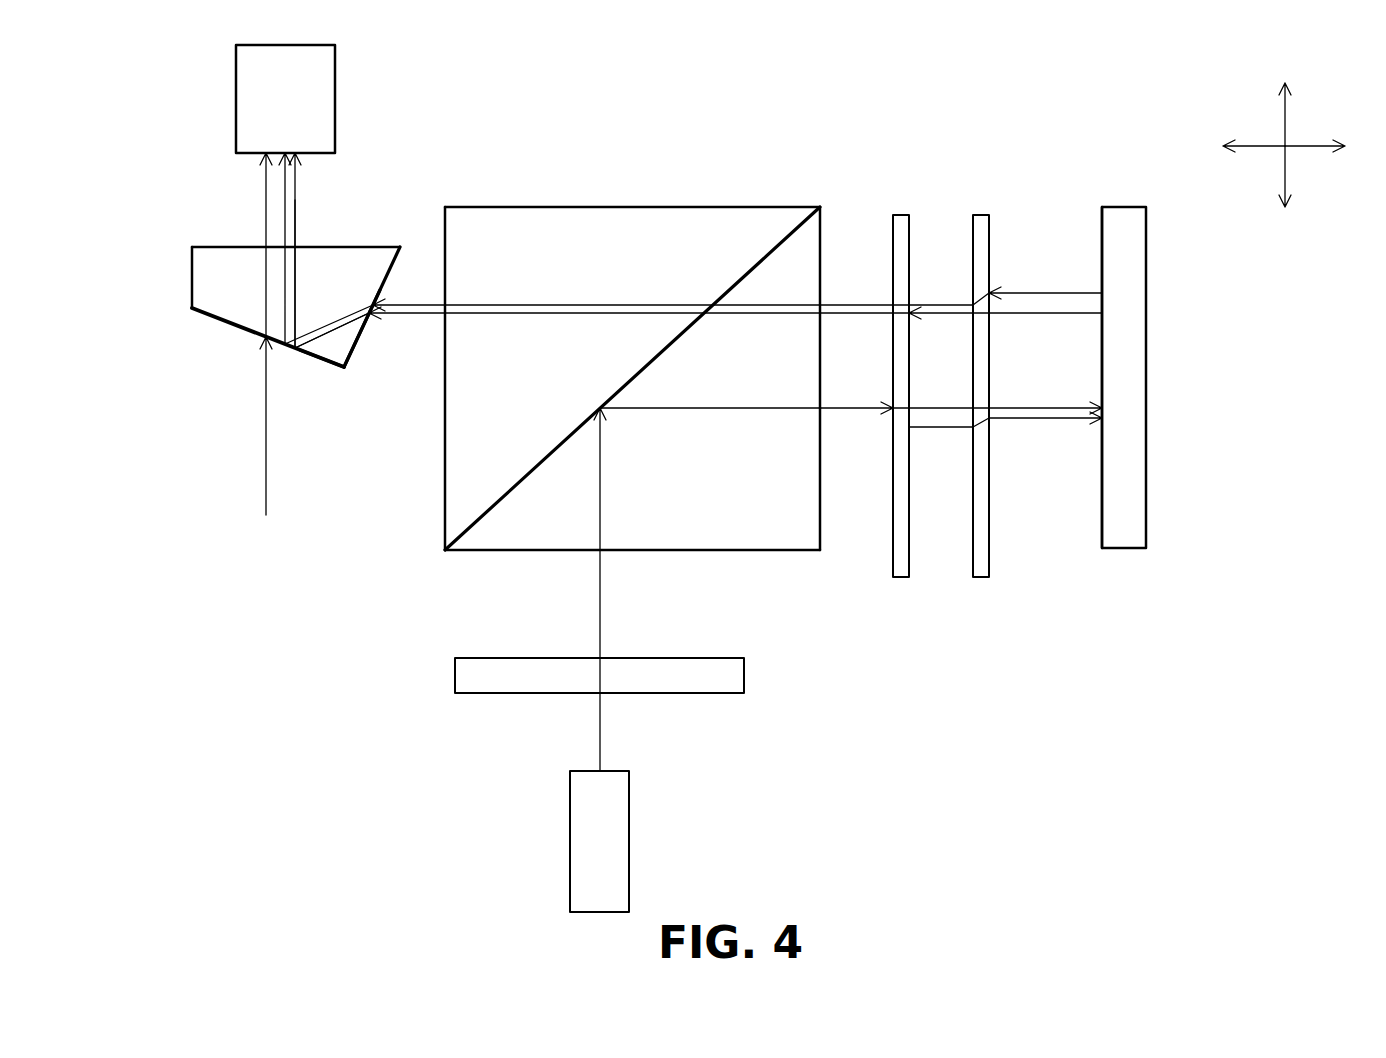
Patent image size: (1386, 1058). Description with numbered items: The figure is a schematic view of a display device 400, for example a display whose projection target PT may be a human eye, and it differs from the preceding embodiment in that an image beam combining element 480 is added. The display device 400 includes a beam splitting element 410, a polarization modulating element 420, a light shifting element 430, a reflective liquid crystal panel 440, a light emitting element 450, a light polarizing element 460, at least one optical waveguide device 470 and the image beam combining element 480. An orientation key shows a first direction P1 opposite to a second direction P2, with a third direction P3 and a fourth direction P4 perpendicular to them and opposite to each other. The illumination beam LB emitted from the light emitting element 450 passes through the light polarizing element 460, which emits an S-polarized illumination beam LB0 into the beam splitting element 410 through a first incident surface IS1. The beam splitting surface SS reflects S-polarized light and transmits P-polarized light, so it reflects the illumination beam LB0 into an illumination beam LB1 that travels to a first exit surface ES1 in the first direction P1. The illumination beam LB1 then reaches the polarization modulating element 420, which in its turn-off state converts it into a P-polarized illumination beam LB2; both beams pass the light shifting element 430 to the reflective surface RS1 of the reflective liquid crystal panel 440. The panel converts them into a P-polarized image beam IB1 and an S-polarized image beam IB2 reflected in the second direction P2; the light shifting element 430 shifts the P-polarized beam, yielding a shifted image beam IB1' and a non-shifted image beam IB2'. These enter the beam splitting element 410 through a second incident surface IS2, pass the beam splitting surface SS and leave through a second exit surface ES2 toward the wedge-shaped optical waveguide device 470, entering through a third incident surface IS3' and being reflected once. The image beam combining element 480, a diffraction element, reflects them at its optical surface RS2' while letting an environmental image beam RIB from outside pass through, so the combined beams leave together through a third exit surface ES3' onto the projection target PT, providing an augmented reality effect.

The display device 400 is at (1135, 779).
The beam splitting element 410 is at (649, 387).
The polarization modulating element 420 is at (901, 215).
The light shifting element 430 is at (981, 215).
The reflective liquid crystal panel 440 is at (1095, 372).
The light emitting element 450 is at (631, 850).
The light polarizing element 460 is at (746, 676).
The optical waveguide device 470 is at (264, 320).
The image beam combining element 480 is at (330, 366).
The projection target PT is at (337, 100).
The environmental image beam RIB is at (264, 447).
The illumination beam LB is at (602, 735).
The illumination beam LB0 is at (602, 505).
The illumination beam LB1 is at (722, 408).
The illumination beam LB2 is at (1037, 421).
The image beam IB1 is at (1045, 276).
The image beam IB2 is at (695, 260).
The shifted image beam IB1' is at (634, 248).
The non-shifted image beam IB2' is at (429, 262).
The beam splitting surface SS is at (548, 472).
The first exit surface ES1 is at (807, 468).
The second exit surface ES2 is at (458, 271).
The third exit surface ES3' is at (273, 230).
The first incident surface IS1 is at (518, 563).
The second incident surface IS2 is at (827, 215).
The third incident surface IS3' is at (372, 330).
The reflective surface RS1 is at (1089, 534).
The optical surface RS2' is at (251, 341).
The first direction P1 is at (1332, 146).
The second direction P2 is at (1237, 146).
The third direction P3 is at (1283, 195).
The fourth direction P4 is at (1283, 100).